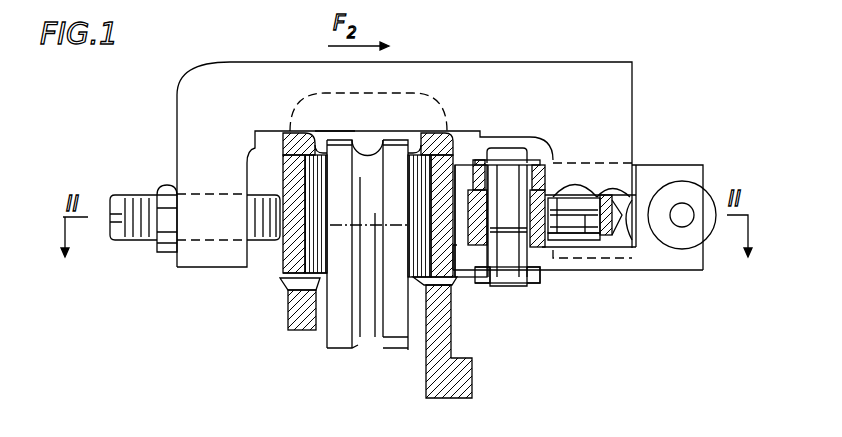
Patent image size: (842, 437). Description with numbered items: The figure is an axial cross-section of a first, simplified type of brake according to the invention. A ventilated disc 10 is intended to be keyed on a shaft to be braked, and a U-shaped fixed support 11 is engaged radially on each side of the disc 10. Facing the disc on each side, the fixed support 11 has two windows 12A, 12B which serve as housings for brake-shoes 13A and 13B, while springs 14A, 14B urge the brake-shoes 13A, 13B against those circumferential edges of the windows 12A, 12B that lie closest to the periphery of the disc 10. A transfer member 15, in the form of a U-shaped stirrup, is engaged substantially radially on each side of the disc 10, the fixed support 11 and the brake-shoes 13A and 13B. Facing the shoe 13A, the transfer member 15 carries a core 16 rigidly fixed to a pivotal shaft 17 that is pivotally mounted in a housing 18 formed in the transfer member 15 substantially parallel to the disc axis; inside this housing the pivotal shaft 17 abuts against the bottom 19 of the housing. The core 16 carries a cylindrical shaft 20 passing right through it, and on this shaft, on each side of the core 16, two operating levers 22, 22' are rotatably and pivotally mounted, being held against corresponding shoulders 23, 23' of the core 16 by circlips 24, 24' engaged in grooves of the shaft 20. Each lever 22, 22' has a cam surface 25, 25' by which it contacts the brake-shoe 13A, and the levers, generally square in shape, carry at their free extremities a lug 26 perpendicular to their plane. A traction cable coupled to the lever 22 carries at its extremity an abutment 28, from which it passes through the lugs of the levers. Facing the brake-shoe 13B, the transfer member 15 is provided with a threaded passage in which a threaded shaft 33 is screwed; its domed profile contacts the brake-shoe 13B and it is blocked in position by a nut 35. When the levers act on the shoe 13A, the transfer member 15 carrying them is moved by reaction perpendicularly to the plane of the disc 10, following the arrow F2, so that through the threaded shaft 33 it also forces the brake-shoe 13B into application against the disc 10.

The disc 10 is at (335, 132).
The fixed support 11 is at (294, 331).
The window 12A is at (407, 280).
The window 12B is at (283, 272).
The brake-shoe 13A is at (427, 190).
The brake-shoe 13B is at (292, 257).
The spring 14A is at (405, 337).
The spring 14B is at (282, 300).
The transfer member 15 is at (507, 63).
The core 16 is at (562, 237).
The pivotal shaft 17 is at (583, 240).
The housing 18 is at (578, 200).
The bottom of the housing 19 is at (606, 206).
The cylindrical shaft 20 is at (507, 217).
The operating lever 22 is at (464, 157).
The operating lever 22' is at (687, 237).
The shoulder 23 is at (565, 114).
The shoulder 23' is at (503, 297).
The circlip 24 is at (546, 142).
The circlip 24' is at (549, 297).
The cam surface 25 is at (442, 157).
The cam surface 25' is at (465, 306).
The lug 26 is at (683, 190).
The abutment 28 is at (680, 220).
The threaded shaft 33 is at (130, 200).
The nut 35 is at (163, 190).